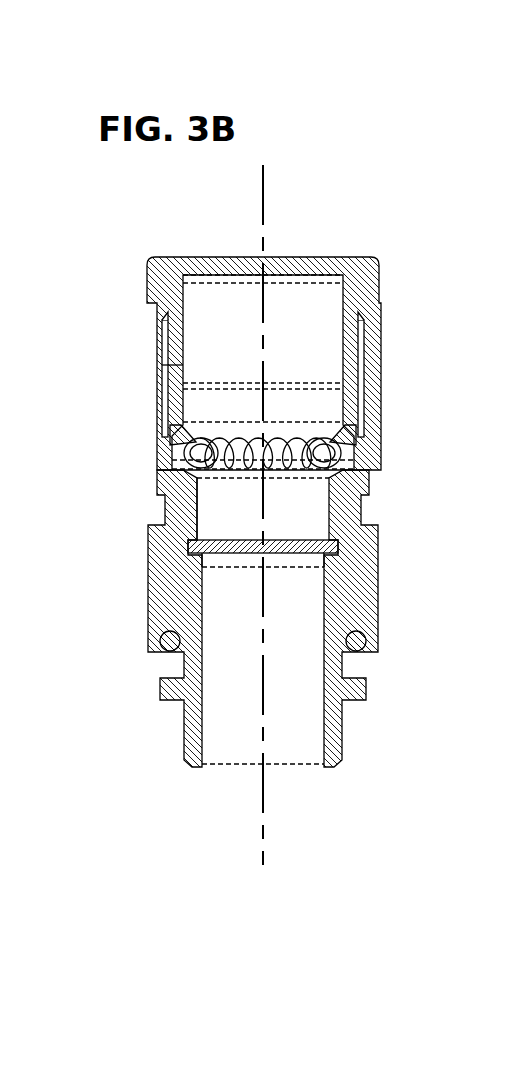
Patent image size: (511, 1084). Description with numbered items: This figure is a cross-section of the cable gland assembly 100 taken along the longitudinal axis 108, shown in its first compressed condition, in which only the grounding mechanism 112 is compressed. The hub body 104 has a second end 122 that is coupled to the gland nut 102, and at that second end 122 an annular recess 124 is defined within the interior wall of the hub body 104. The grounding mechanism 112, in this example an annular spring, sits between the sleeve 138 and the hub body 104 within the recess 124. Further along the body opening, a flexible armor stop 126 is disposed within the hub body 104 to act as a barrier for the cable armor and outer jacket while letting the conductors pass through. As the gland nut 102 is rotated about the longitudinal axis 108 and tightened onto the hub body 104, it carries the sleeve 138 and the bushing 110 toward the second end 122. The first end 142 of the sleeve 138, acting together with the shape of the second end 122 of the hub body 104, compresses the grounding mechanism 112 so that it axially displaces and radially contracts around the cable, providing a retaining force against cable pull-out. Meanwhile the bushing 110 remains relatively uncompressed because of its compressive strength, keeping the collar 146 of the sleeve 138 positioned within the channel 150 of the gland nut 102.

The cable gland assembly 100 is at (398, 226).
The gland nut 102 is at (163, 252).
The hub body 104 is at (188, 761).
The longitudinal axis 108 is at (263, 795).
The bushing 110 is at (163, 344).
The grounding mechanism 112 is at (183, 462).
The second end 122 is at (368, 445).
The annular recess 124 is at (215, 480).
The flexible armor stop 126 is at (205, 558).
The sleeve 138 is at (170, 408).
The first end 142 is at (350, 448).
The collar 146 is at (168, 372).
The channel 150 is at (367, 341).